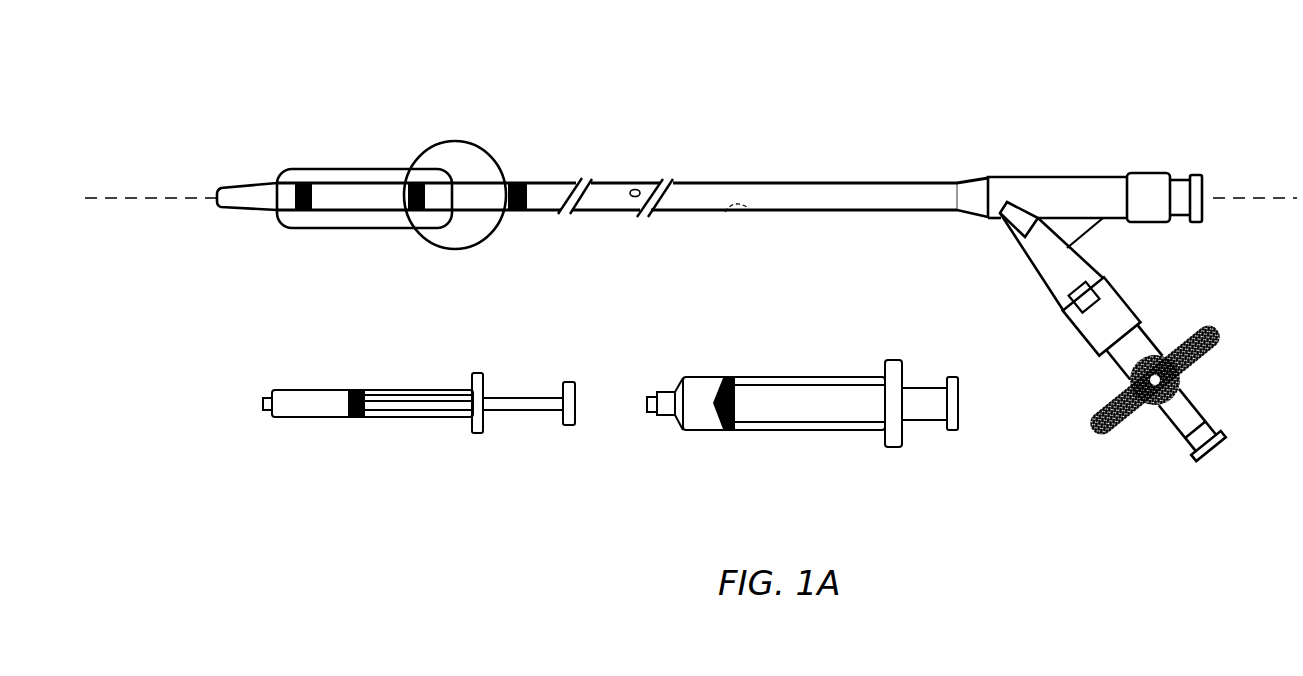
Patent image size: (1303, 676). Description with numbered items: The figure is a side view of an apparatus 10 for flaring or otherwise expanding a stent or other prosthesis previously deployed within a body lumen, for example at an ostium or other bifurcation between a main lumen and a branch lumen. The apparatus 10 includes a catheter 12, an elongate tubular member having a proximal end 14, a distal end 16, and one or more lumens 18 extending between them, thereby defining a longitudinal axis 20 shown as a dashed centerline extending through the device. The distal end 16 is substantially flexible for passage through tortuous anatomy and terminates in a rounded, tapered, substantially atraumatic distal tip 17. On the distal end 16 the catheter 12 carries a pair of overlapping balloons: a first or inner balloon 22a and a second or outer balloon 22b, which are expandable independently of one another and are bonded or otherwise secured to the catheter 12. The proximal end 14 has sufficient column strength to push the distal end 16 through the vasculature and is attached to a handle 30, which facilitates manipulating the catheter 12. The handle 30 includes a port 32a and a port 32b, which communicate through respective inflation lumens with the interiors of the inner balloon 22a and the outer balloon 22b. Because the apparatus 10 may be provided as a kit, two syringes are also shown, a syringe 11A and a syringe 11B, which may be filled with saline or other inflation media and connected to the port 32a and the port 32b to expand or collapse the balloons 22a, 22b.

The apparatus 10 is at (850, 130).
The syringe 11A is at (406, 429).
The syringe 11B is at (810, 440).
The catheter 12 is at (762, 180).
The proximal end 14 is at (935, 213).
The distal end 16 is at (533, 213).
The distal tip 17 is at (238, 210).
The lumen 18 is at (718, 216).
The longitudinal axis 20 is at (165, 196).
The inner balloon 22a is at (355, 168).
The outer balloon 22b is at (468, 142).
The handle 30 is at (1051, 176).
The port 32a is at (1197, 456).
The port 32b is at (1196, 174).